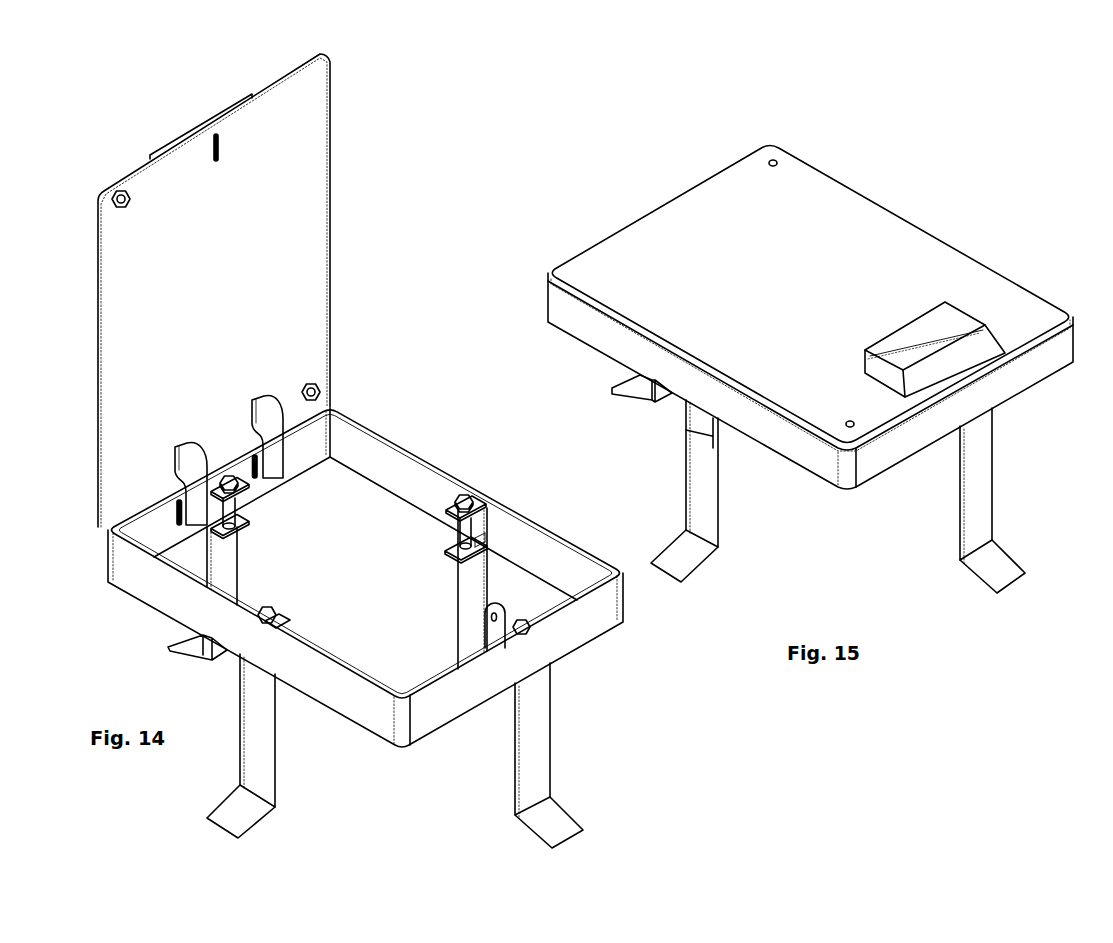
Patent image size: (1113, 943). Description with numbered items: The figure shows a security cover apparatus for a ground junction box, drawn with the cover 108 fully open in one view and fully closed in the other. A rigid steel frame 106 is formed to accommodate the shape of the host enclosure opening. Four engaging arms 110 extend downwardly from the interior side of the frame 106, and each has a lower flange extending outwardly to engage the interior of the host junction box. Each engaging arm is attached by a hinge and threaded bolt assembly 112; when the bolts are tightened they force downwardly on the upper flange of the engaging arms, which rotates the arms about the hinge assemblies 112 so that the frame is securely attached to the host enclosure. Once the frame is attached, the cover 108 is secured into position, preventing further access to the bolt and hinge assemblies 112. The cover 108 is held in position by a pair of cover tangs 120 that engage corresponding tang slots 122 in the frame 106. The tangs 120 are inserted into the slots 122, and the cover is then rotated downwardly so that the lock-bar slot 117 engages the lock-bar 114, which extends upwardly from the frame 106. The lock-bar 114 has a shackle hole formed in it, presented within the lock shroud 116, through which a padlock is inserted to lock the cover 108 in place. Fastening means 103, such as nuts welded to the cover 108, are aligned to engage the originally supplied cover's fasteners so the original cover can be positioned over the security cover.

In FIG. 14, the fastening means 103 is at (112, 199).
In FIG. 15, the fastening means 103 is at (776, 161).
In FIG. 14, the frame 106 is at (383, 436).
In FIG. 15, the frame 106 is at (805, 473).
In FIG. 14, the cover 108 is at (333, 195).
In FIG. 15, the cover 108 is at (873, 195).
In FIG. 14, the engaging arms 110 is at (458, 577).
In FIG. 15, the engaging arms 110 is at (686, 470).
In FIG. 14, the hinge and threaded bolt assembly 112 is at (452, 528).
In FIG. 14, the lock-bar 114 is at (491, 617).
In FIG. 15, the lock shroud 116 is at (898, 326).
In FIG. 14, the lock-bar slot 117 is at (217, 162).
In FIG. 14, the cover tangs 120 is at (199, 446).
In FIG. 14, the tang slots 122 is at (178, 505).